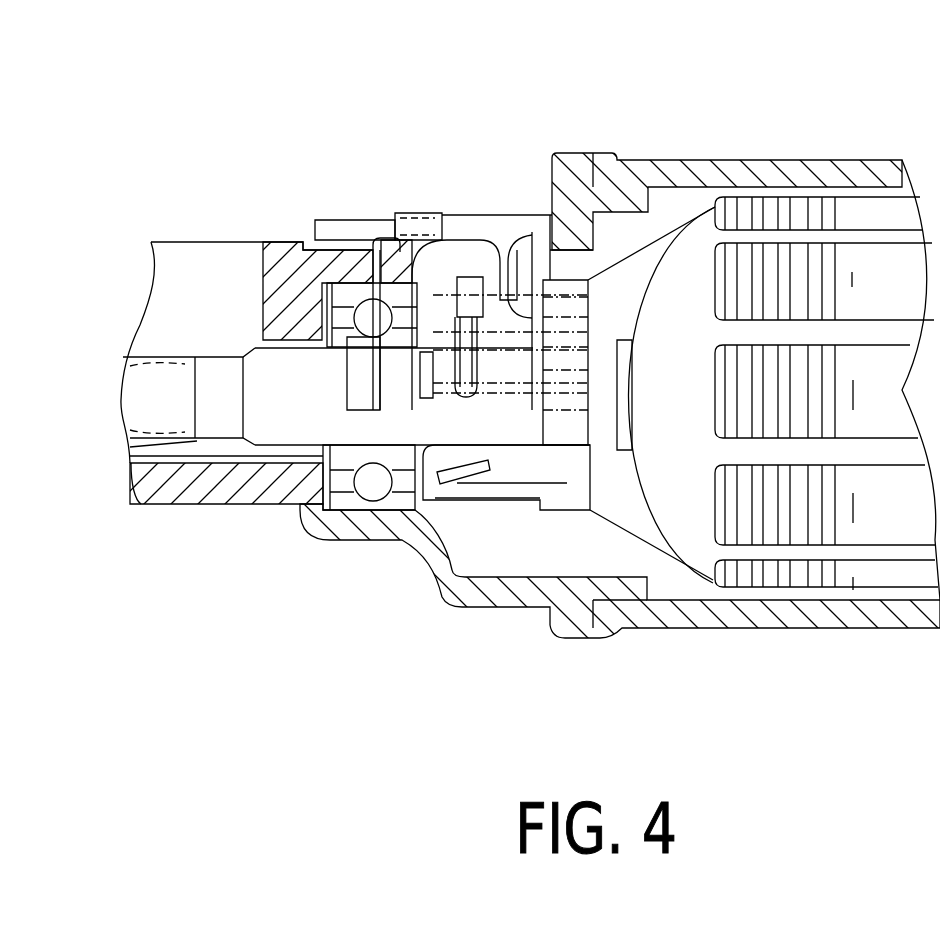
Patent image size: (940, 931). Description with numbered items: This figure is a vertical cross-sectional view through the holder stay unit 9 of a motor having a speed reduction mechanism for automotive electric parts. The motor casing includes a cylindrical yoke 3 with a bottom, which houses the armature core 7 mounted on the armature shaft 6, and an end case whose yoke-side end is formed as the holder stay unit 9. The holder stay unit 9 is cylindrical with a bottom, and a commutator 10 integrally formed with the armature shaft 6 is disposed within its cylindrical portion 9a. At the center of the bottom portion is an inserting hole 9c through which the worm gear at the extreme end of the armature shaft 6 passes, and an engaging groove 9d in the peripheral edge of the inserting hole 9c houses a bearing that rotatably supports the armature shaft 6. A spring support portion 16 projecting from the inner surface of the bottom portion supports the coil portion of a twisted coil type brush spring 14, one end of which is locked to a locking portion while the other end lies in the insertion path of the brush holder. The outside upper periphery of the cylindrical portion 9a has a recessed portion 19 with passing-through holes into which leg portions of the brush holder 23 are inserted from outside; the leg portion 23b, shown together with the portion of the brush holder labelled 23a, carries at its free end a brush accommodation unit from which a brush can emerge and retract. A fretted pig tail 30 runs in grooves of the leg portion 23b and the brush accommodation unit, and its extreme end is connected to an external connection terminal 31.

The yoke 3 is at (758, 160).
The armature shaft 6 is at (272, 432).
The armature core 7 is at (795, 255).
The holder stay unit 9 is at (441, 183).
The cylindrical portion 9a is at (480, 598).
The inserting hole 9c is at (265, 345).
The engaging groove 9d is at (360, 500).
The commutator 10 is at (527, 490).
The second brush spring 14 is at (463, 277).
The second spring support portion 16 is at (470, 283).
The recessed portion 19 is at (390, 243).
The brush holder 23 is at (528, 202).
The carrier plate 23a is at (337, 223).
The leg portion 23b is at (547, 253).
The pig tail 30 is at (523, 307).
The external connection terminal 31 is at (365, 292).